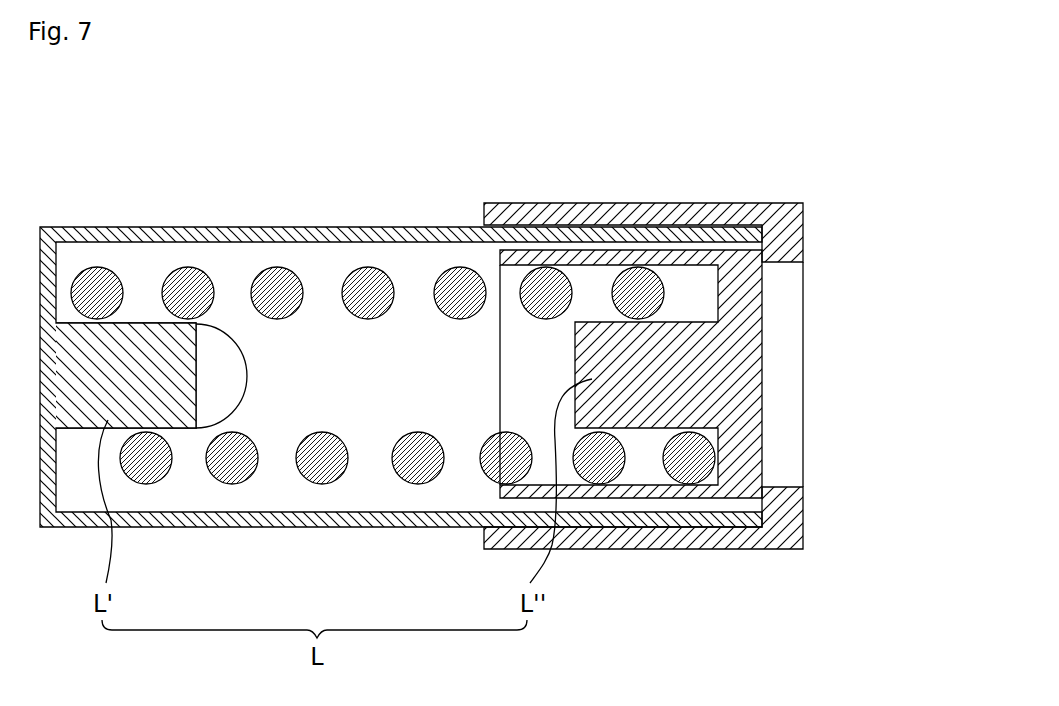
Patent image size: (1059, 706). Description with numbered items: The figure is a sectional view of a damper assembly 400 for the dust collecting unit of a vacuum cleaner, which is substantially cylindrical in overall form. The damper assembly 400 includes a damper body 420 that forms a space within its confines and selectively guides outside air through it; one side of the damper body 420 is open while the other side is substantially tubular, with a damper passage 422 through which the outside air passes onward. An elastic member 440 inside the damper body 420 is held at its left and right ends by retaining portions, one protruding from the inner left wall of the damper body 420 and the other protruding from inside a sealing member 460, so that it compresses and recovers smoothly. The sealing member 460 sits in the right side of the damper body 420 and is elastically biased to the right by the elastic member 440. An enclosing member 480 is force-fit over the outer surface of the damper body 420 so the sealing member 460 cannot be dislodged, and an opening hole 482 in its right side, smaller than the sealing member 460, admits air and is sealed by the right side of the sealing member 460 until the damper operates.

The damper assembly 400 is at (557, 107).
The damper body 420 is at (243, 228).
The damper passage 422 is at (230, 377).
The elastic member 440 is at (360, 274).
The sealing member 460 is at (502, 259).
The enclosing member 480 is at (551, 212).
The opening hole 482 is at (782, 362).